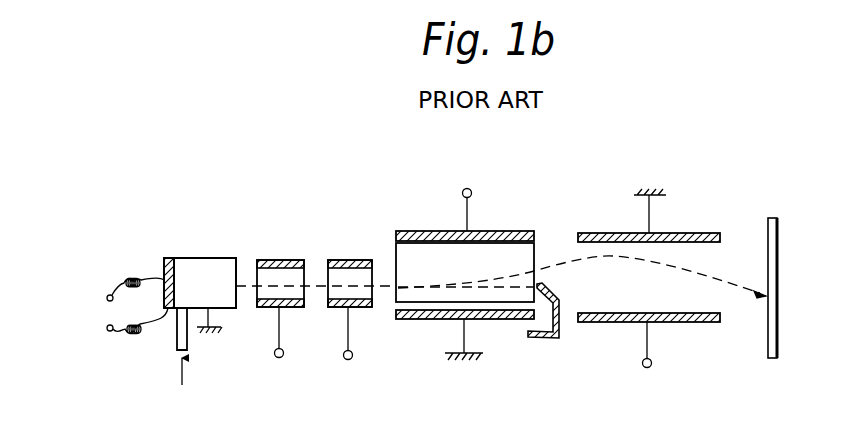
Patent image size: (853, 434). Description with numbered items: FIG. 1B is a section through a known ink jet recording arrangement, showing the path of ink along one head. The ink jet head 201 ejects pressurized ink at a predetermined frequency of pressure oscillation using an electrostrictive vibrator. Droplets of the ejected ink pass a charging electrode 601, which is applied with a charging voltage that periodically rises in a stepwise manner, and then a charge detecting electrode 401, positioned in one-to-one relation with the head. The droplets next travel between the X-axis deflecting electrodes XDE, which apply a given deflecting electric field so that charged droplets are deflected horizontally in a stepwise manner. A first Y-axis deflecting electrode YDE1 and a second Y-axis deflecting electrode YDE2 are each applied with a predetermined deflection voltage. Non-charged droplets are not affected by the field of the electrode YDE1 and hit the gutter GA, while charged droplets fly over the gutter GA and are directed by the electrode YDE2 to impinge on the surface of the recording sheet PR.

The ink jet head 201 is at (203, 258).
The charging electrode 601 is at (282, 260).
The charge detecting electrode 401 is at (351, 260).
The first Y-axis deflecting electrode YDE1 is at (423, 231).
The second Y-axis deflecting electrode YDE2 is at (605, 233).
The x-axis deflecting electrode XDE is at (393, 290).
The gutter GA is at (548, 338).
The recording sheet PR is at (780, 241).